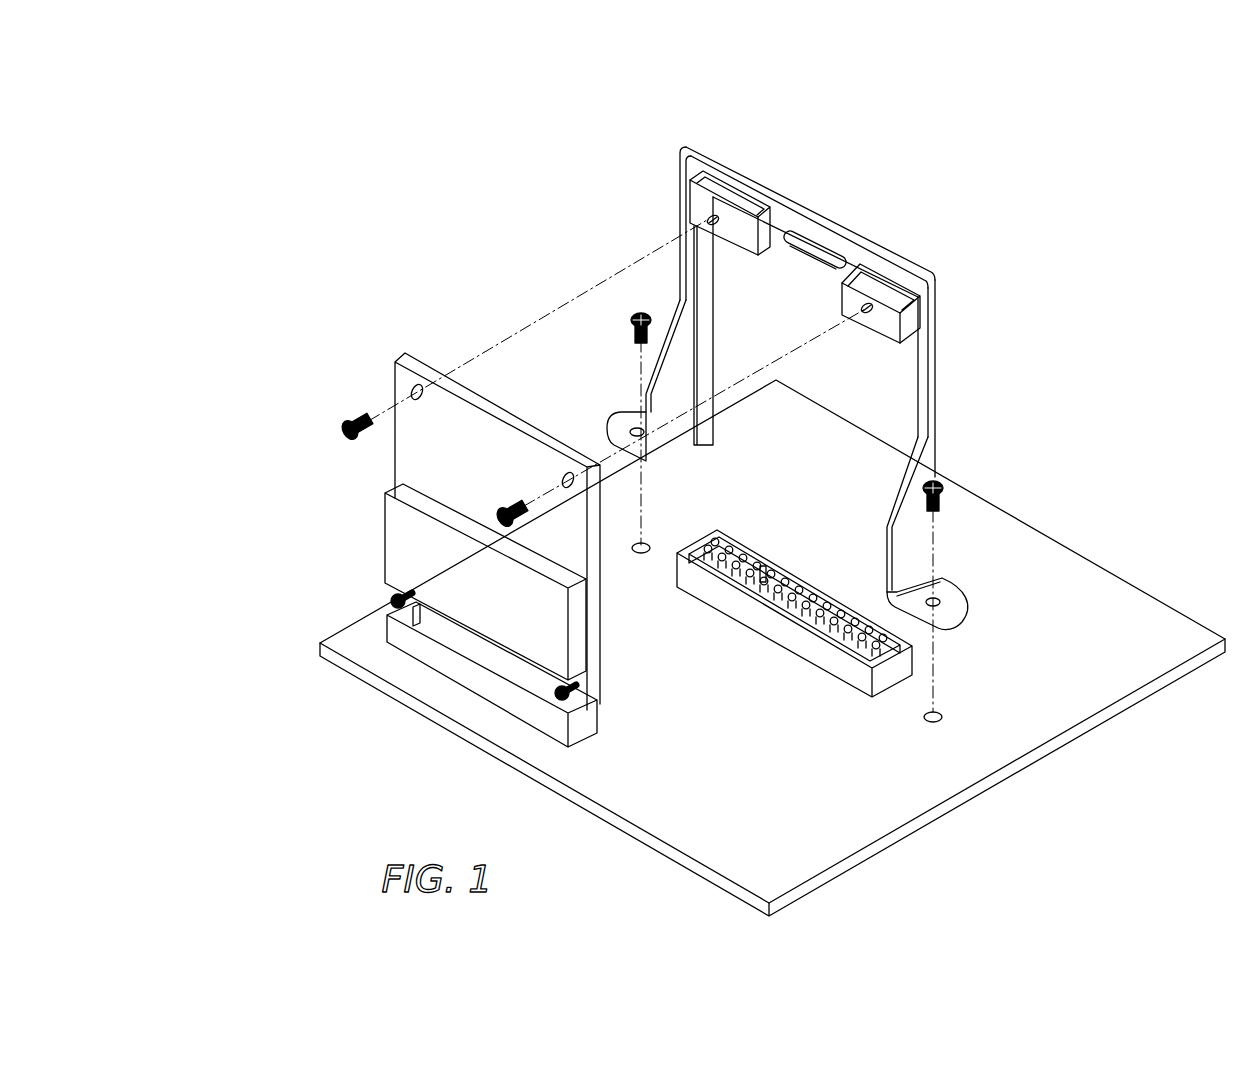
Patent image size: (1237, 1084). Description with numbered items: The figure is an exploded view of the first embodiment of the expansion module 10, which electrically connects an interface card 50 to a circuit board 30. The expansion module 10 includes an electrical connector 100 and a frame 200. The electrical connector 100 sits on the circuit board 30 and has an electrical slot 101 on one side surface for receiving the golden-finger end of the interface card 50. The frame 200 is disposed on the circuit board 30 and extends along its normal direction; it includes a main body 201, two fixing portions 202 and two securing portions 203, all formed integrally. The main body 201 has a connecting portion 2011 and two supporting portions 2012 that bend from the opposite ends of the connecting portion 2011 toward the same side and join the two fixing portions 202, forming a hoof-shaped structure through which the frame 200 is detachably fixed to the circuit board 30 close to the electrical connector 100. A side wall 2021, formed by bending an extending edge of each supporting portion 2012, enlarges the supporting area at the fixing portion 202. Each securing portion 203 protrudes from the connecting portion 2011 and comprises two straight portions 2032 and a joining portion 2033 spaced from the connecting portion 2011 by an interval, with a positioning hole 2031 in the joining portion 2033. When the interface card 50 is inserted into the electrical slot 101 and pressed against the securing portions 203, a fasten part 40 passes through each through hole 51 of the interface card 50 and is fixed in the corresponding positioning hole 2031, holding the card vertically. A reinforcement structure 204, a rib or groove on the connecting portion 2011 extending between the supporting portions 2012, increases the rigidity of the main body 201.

The expansion module 10 is at (247, 144).
The circuit board 30 is at (1157, 615).
The fasten part 40 is at (632, 318).
The interface card 50 is at (455, 550).
The through hole 51 is at (410, 393).
The electrical connector 100 is at (862, 702).
The electrical slot 101 is at (860, 665).
The frame 200 is at (755, 368).
The main body 201 is at (773, 301).
The connecting portion 2011 is at (810, 211).
The supporting portion 2012 is at (688, 292).
The fixing portion 202 is at (614, 427).
The side wall 2021 is at (665, 386).
The securing portion 203 is at (808, 241).
The positioning hole 2031 is at (707, 217).
The straight portion 2032 is at (760, 223).
The joining portion 2033 is at (706, 192).
The reinforcement structure 204 is at (804, 242).